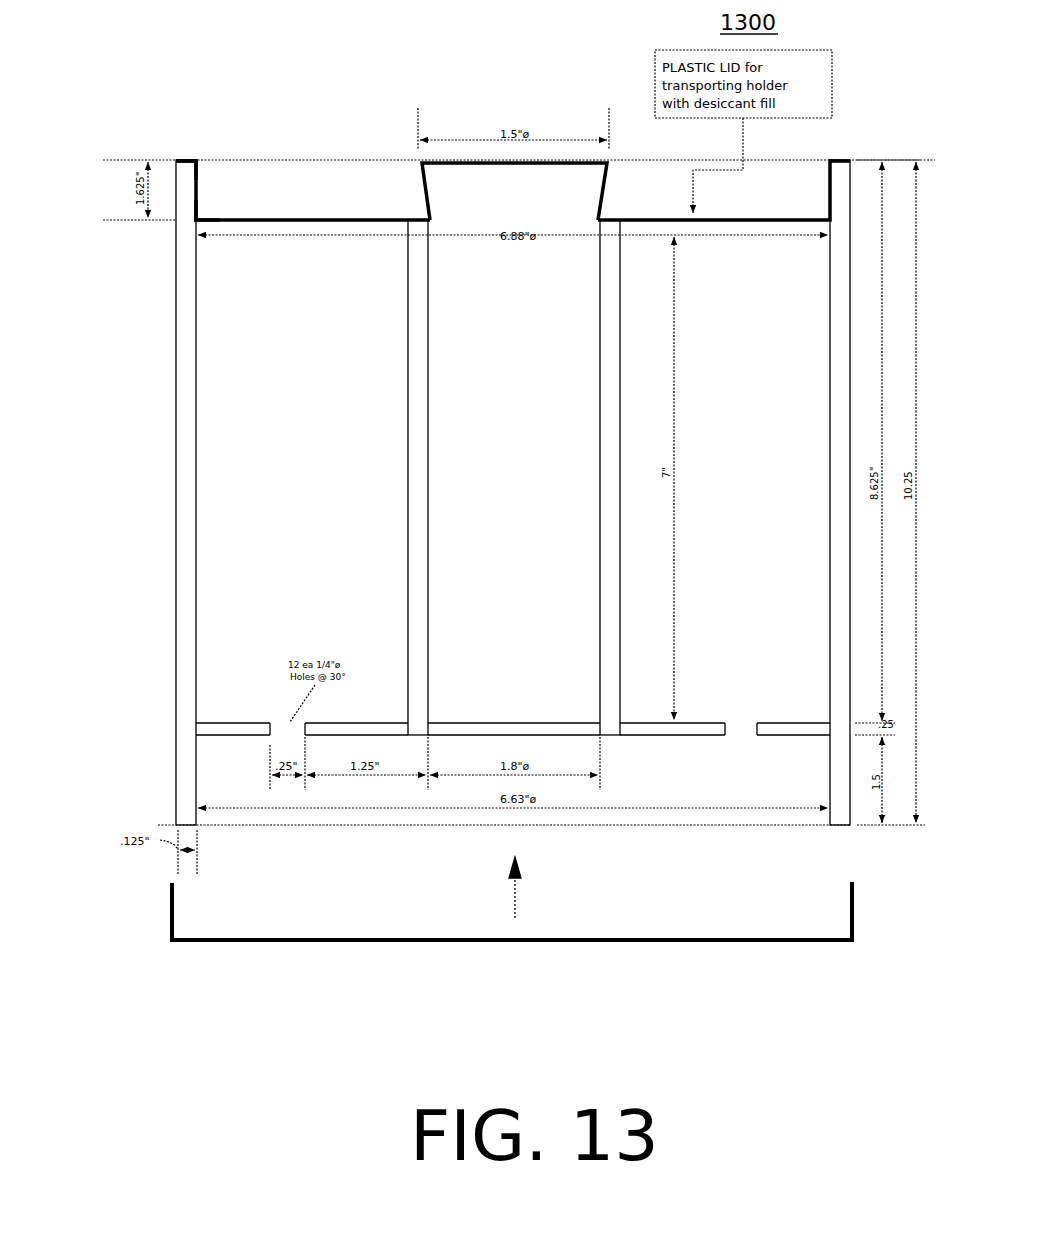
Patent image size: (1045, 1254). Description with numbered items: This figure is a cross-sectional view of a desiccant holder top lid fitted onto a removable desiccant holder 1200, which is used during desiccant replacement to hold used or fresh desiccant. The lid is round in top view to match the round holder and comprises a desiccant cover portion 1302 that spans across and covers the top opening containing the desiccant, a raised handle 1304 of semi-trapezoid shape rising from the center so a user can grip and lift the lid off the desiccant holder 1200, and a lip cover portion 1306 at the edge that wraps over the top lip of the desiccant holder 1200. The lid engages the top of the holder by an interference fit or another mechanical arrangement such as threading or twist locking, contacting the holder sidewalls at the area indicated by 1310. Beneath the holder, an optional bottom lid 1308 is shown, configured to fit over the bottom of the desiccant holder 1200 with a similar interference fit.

The removable desiccant holder 1200 is at (166, 328).
The desiccant cover portion 1302 is at (313, 214).
The raised handle 1304 is at (557, 144).
The lip cover portion 1306 is at (183, 150).
The bottom lid 1308 is at (728, 958).
The lid engagement area 1310 is at (205, 188).